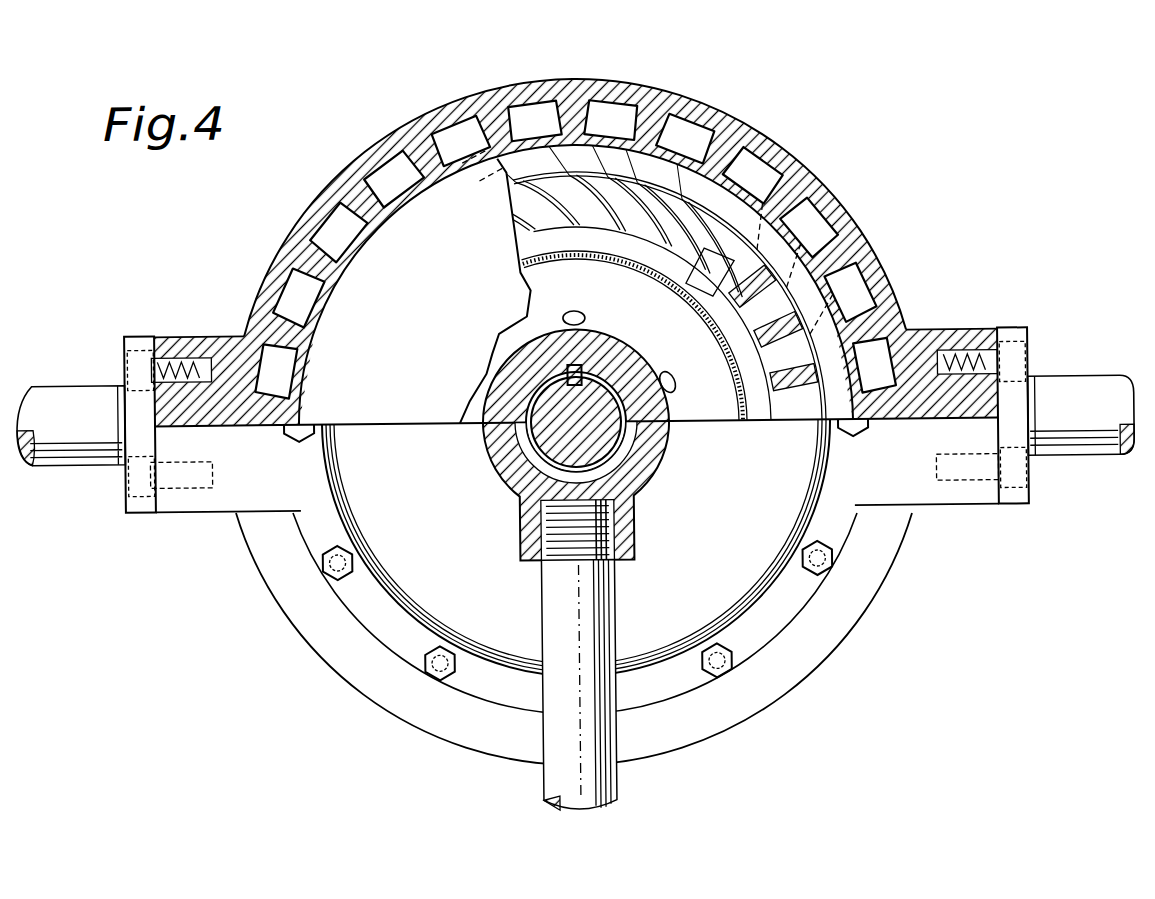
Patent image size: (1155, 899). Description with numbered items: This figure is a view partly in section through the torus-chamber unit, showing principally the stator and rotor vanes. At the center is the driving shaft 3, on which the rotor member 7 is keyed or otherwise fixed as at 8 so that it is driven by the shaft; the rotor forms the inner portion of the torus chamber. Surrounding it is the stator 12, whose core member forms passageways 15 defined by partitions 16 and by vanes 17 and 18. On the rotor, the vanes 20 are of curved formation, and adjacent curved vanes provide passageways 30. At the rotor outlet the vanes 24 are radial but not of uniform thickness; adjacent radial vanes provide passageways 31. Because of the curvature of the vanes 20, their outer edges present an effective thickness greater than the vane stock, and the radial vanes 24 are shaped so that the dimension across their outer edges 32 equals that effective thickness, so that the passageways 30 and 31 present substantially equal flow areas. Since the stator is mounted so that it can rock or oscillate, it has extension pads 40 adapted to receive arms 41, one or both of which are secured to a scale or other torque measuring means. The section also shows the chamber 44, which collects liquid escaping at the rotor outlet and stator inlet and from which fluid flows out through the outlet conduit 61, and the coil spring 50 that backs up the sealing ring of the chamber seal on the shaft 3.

The driving shaft 3 is at (544, 447).
The rotor member 7 is at (561, 356).
The key 8 is at (568, 375).
The stator 12 is at (517, 92).
The passageways 15 is at (747, 132).
The partitions 16 is at (704, 135).
The vanes 17 is at (592, 112).
The vanes 18 is at (857, 265).
The vanes 20 is at (524, 221).
The vanes 24 is at (731, 351).
The passageways 30 is at (607, 224).
The passageways 31 is at (777, 358).
The outer edges 32 is at (790, 422).
The extension pads 40 is at (188, 331).
The arms 41 is at (100, 388).
The chamber 44 is at (628, 471).
The coil spring 50 is at (599, 476).
The outlet conduit 61 is at (596, 692).